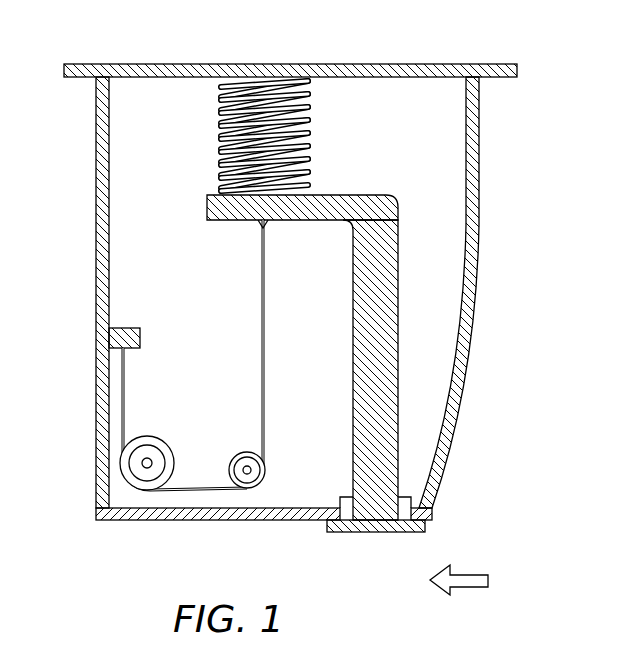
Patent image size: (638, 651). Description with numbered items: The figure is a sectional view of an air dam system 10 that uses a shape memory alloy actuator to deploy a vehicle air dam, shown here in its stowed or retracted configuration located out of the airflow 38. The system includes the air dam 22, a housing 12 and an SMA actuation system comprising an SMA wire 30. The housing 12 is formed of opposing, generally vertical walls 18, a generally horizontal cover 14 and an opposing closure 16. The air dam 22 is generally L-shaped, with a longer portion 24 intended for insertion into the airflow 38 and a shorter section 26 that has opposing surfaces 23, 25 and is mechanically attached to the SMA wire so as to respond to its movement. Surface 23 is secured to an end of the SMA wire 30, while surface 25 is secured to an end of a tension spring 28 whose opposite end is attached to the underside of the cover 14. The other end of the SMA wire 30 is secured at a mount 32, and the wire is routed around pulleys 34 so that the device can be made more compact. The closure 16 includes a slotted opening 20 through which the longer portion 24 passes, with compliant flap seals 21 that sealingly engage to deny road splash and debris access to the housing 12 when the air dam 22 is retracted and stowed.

The air dam system 10 is at (382, 56).
The housing 12 is at (90, 247).
The cover 14 is at (137, 64).
The closure 16 is at (167, 522).
The vertical walls 18 is at (96, 160).
The slotted opening 20 is at (396, 499).
The compliant flap seals 21 is at (395, 532).
The air dam 22 is at (307, 335).
The surface 23 is at (222, 221).
The longer portion 24 is at (399, 318).
The surface 25 is at (216, 195).
The shorter section 26 is at (346, 196).
The tension spring 28 is at (215, 135).
The SMA wire 30 is at (120, 393).
The mount 32 is at (110, 338).
The pulleys 34 is at (136, 463).
The airflow 38 is at (481, 613).